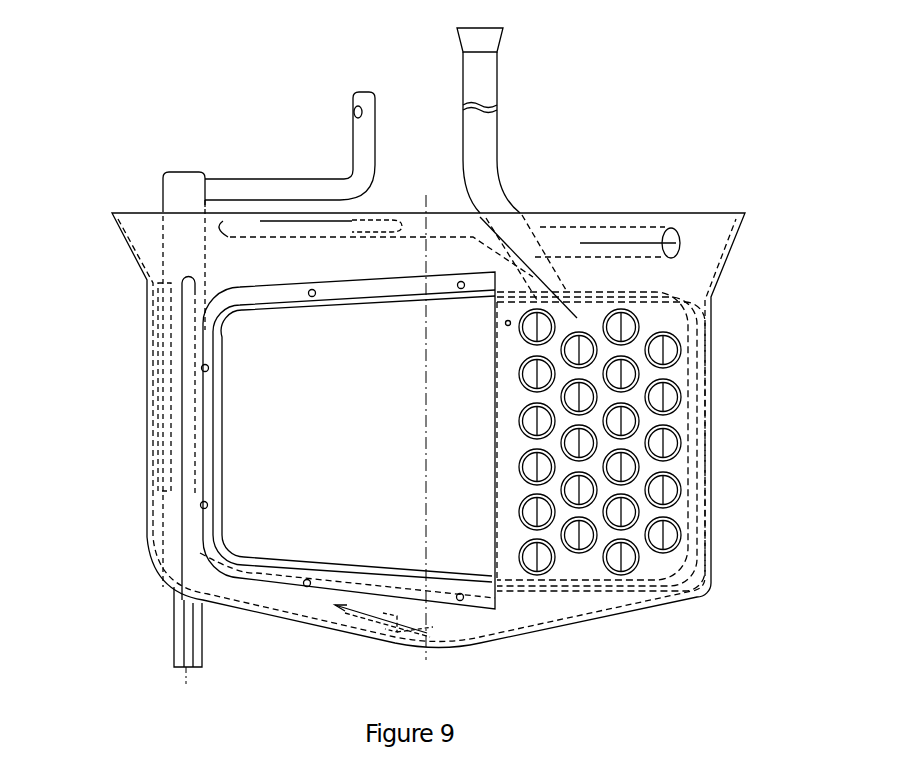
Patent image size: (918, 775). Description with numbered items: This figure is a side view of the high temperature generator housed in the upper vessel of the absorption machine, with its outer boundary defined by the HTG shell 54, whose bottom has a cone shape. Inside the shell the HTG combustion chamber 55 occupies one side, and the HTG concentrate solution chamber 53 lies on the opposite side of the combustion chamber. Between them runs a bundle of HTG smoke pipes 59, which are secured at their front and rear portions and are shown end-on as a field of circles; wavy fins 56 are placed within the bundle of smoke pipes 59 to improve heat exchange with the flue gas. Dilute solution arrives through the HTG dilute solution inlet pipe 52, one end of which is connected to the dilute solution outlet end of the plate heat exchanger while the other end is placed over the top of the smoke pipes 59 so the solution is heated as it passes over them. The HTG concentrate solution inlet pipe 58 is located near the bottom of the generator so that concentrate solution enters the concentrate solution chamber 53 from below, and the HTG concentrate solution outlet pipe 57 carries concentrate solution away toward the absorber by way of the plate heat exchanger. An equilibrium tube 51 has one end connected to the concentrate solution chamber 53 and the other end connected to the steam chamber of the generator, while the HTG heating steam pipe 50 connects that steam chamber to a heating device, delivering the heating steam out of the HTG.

The HTG heating steam pipe 50 is at (409, 173).
The equilibrium tube 51 is at (270, 131).
The HTG dilute solution inlet pipe 52 is at (417, 197).
The HTG concentrate solution chamber 53 is at (129, 354).
The HTG shell 54 is at (399, 421).
The HTG combustion chamber 55 is at (274, 426).
The wavy fin 56 is at (379, 441).
The HTG concentrate solution outlet pipe 57 is at (182, 633).
The HTG concentrate solution inlet pipe 58 is at (455, 640).
The HTG smoke pipes 59 is at (717, 473).